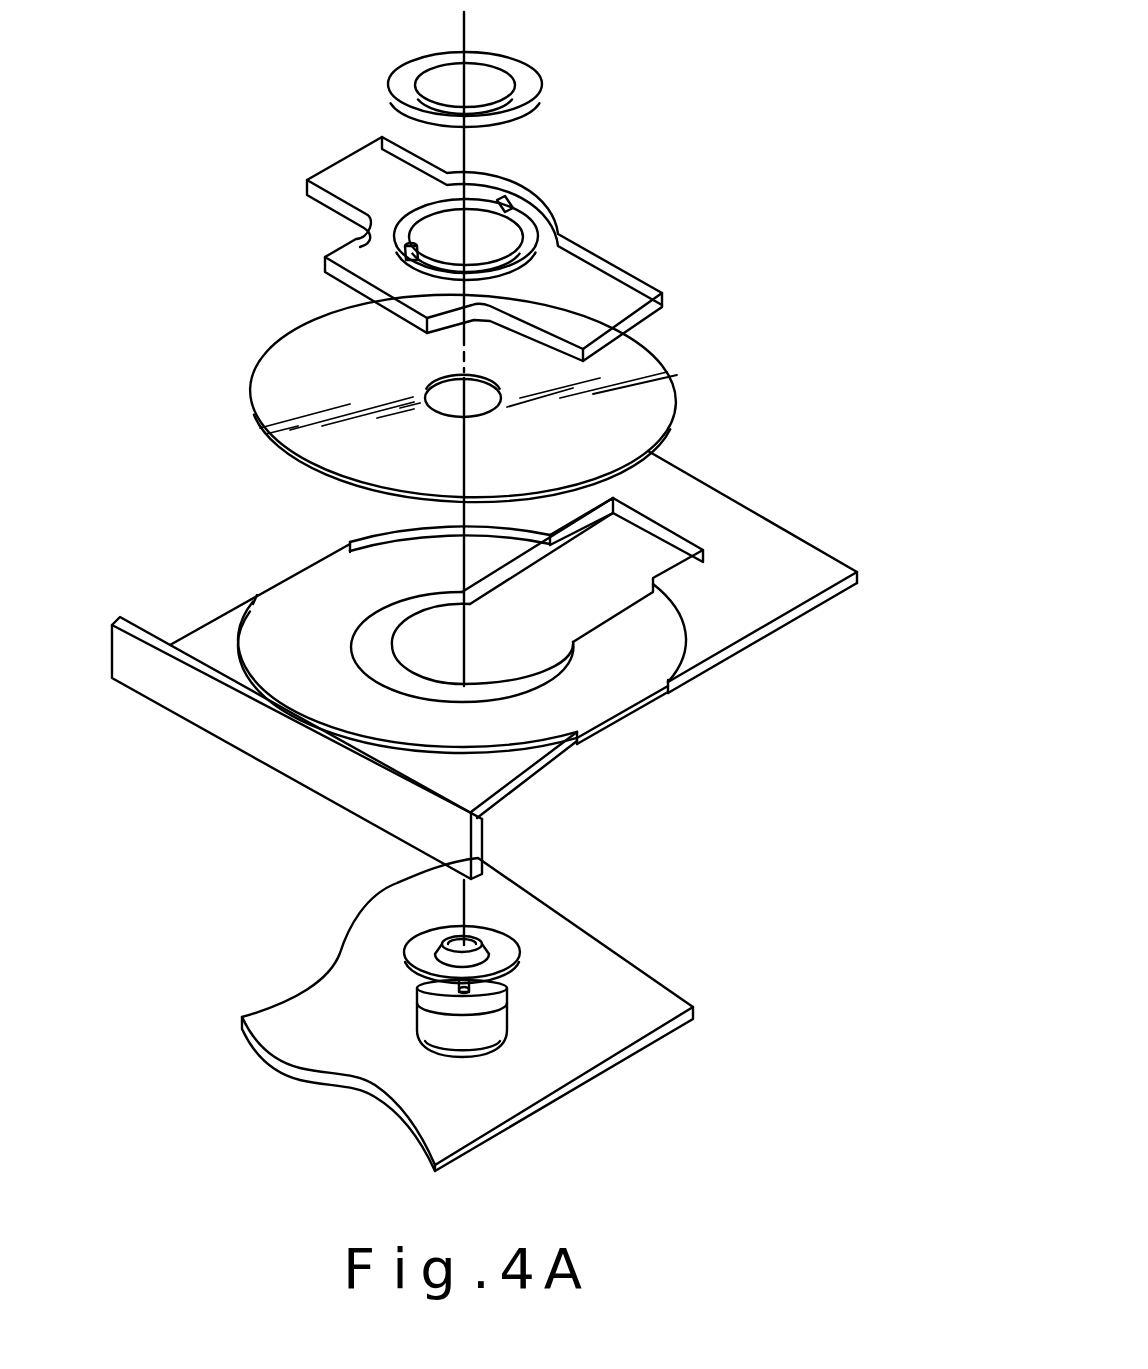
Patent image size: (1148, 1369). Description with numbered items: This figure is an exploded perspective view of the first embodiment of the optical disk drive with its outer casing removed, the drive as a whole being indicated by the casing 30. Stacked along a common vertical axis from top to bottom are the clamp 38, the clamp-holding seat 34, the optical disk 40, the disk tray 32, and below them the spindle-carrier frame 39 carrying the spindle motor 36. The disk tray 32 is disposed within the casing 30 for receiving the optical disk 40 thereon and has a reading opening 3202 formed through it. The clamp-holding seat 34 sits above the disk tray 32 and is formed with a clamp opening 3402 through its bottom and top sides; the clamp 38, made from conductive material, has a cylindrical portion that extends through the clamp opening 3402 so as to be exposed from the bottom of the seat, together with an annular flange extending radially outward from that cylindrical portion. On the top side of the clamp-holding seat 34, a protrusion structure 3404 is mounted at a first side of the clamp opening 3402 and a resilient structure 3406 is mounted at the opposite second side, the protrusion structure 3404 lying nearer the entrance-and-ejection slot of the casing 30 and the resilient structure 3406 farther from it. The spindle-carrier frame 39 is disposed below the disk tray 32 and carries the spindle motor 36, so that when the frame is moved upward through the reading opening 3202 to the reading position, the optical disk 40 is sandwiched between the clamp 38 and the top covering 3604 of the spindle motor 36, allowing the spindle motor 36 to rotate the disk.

The casing 30 is at (748, 69).
The disk tray 32 is at (758, 613).
The reading opening 3202 is at (486, 637).
The clamp-holding seat 34 is at (615, 310).
The clamp opening 3402 is at (437, 248).
The protrusion structure 3404 is at (390, 252).
The resilient structure 3406 is at (520, 200).
The spindle motor 36 is at (482, 1023).
The top covering 3604 is at (510, 948).
The clamp 38 is at (528, 87).
The spindle-carrier frame 39 is at (312, 1008).
The optical disk 40 is at (656, 410).